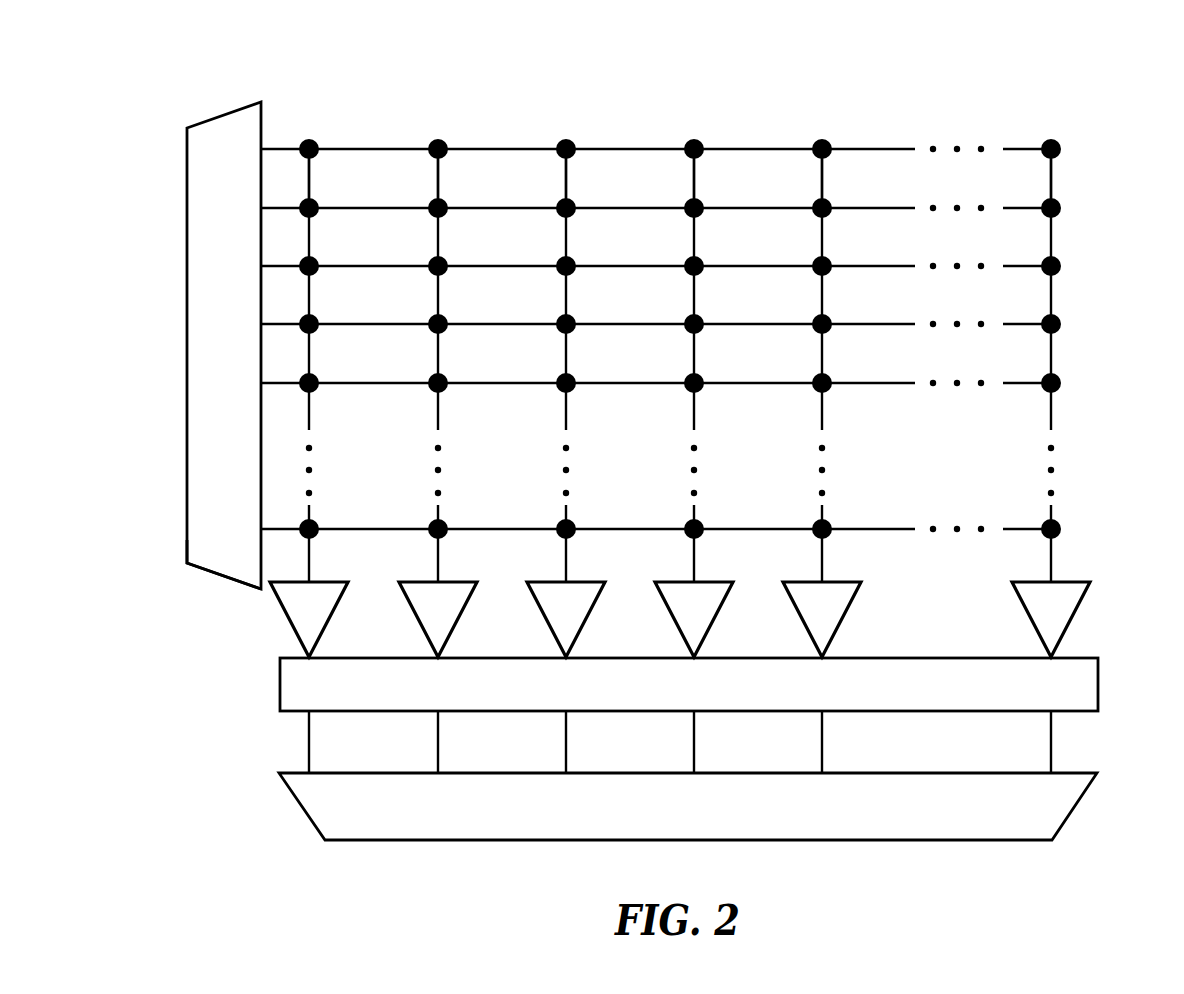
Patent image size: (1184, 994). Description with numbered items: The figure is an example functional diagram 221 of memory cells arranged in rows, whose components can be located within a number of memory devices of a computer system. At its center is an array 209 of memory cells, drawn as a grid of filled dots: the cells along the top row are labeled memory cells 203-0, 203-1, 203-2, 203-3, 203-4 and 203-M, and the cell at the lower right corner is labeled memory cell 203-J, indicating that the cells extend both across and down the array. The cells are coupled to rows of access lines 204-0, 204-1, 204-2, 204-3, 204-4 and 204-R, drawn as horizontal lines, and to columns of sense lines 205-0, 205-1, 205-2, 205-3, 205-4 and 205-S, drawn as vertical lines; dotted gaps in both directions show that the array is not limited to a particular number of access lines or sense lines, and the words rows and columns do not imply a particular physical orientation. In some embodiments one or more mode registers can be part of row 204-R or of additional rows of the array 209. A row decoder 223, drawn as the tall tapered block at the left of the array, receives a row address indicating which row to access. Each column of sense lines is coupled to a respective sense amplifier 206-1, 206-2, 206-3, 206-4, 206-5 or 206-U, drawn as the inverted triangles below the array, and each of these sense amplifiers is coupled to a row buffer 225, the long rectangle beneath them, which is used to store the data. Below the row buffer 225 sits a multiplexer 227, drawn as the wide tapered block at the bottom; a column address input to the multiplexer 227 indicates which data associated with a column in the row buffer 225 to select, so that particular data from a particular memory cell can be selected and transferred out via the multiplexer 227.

The functional diagram 221 is at (607, 298).
The array 209 is at (285, 85).
The row decoder 223 is at (235, 577).
The row buffer 225 is at (1093, 666).
The multiplexer 227 is at (1090, 774).
The memory cell 203-J is at (1058, 522).
The memory cell 203-0 is at (316, 141).
The memory cell 203-1 is at (445, 141).
The memory cell 203-2 is at (573, 141).
The memory cell 203-3 is at (701, 141).
The memory cell 203-4 is at (829, 141).
The memory cell 203-M is at (1058, 141).
The access line 204-0 is at (361, 152).
The access line 204-1 is at (361, 211).
The access line 204-2 is at (361, 269).
The access line 204-3 is at (361, 327).
The access line 204-4 is at (361, 386).
The access line 204-R is at (361, 532).
The sense line 205-0 is at (310, 178).
The sense line 205-1 is at (439, 178).
The sense line 205-2 is at (567, 178).
The sense line 205-3 is at (695, 178).
The sense line 205-4 is at (823, 178).
The sense line 205-S is at (1052, 178).
The sense amplifier 206-1 is at (331, 617).
The sense amplifier 206-2 is at (460, 617).
The sense amplifier 206-3 is at (588, 617).
The sense amplifier 206-4 is at (716, 617).
The sense amplifier 206-5 is at (844, 617).
The sense amplifier 206-U is at (1083, 596).